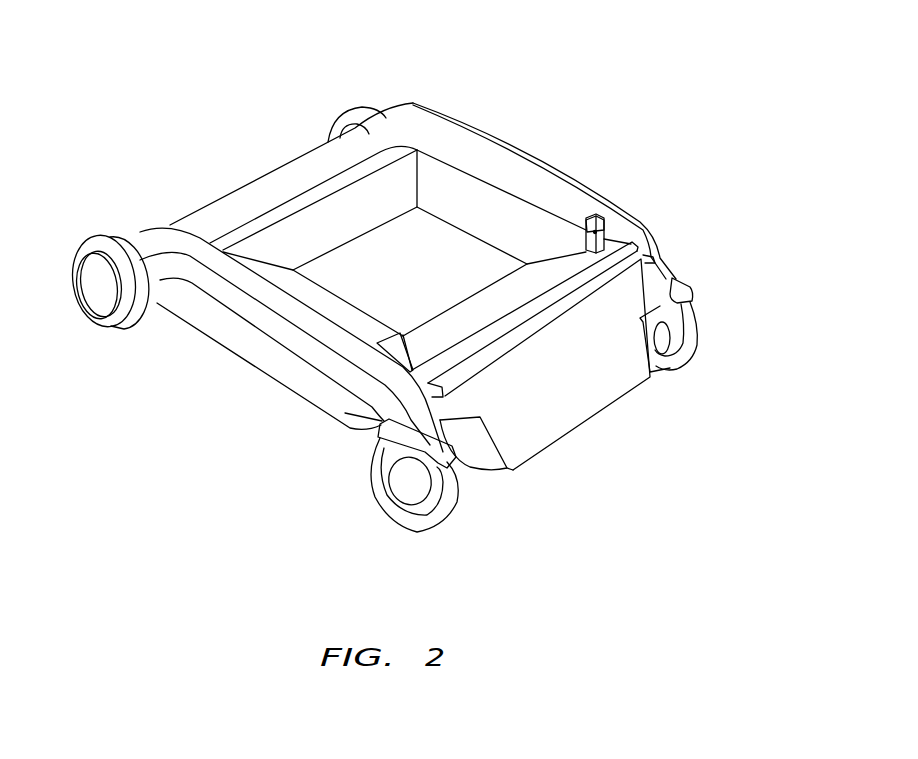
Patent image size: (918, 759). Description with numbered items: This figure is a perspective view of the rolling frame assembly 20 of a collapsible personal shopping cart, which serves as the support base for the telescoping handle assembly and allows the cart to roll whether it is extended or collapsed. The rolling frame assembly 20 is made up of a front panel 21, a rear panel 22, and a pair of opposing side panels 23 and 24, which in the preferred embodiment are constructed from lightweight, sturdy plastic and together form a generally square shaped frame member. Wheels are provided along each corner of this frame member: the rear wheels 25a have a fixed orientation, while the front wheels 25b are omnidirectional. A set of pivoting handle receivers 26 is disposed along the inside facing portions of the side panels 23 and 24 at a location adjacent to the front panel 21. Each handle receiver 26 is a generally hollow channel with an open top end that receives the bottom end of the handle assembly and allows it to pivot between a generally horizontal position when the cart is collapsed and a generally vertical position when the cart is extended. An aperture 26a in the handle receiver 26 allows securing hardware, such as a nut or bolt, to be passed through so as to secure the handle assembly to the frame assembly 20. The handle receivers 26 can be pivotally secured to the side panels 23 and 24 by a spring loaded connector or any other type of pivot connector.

The rolling frame assembly 20 is at (193, 80).
The front panel 21 is at (563, 393).
The rear panel 22 is at (266, 192).
The side panel 23 is at (505, 170).
The side panel 24 is at (266, 313).
The rear wheels 25a is at (97, 238).
The front wheels 25b is at (693, 332).
The pivoting handle receivers 26 is at (604, 223).
The aperture 26a is at (587, 219).